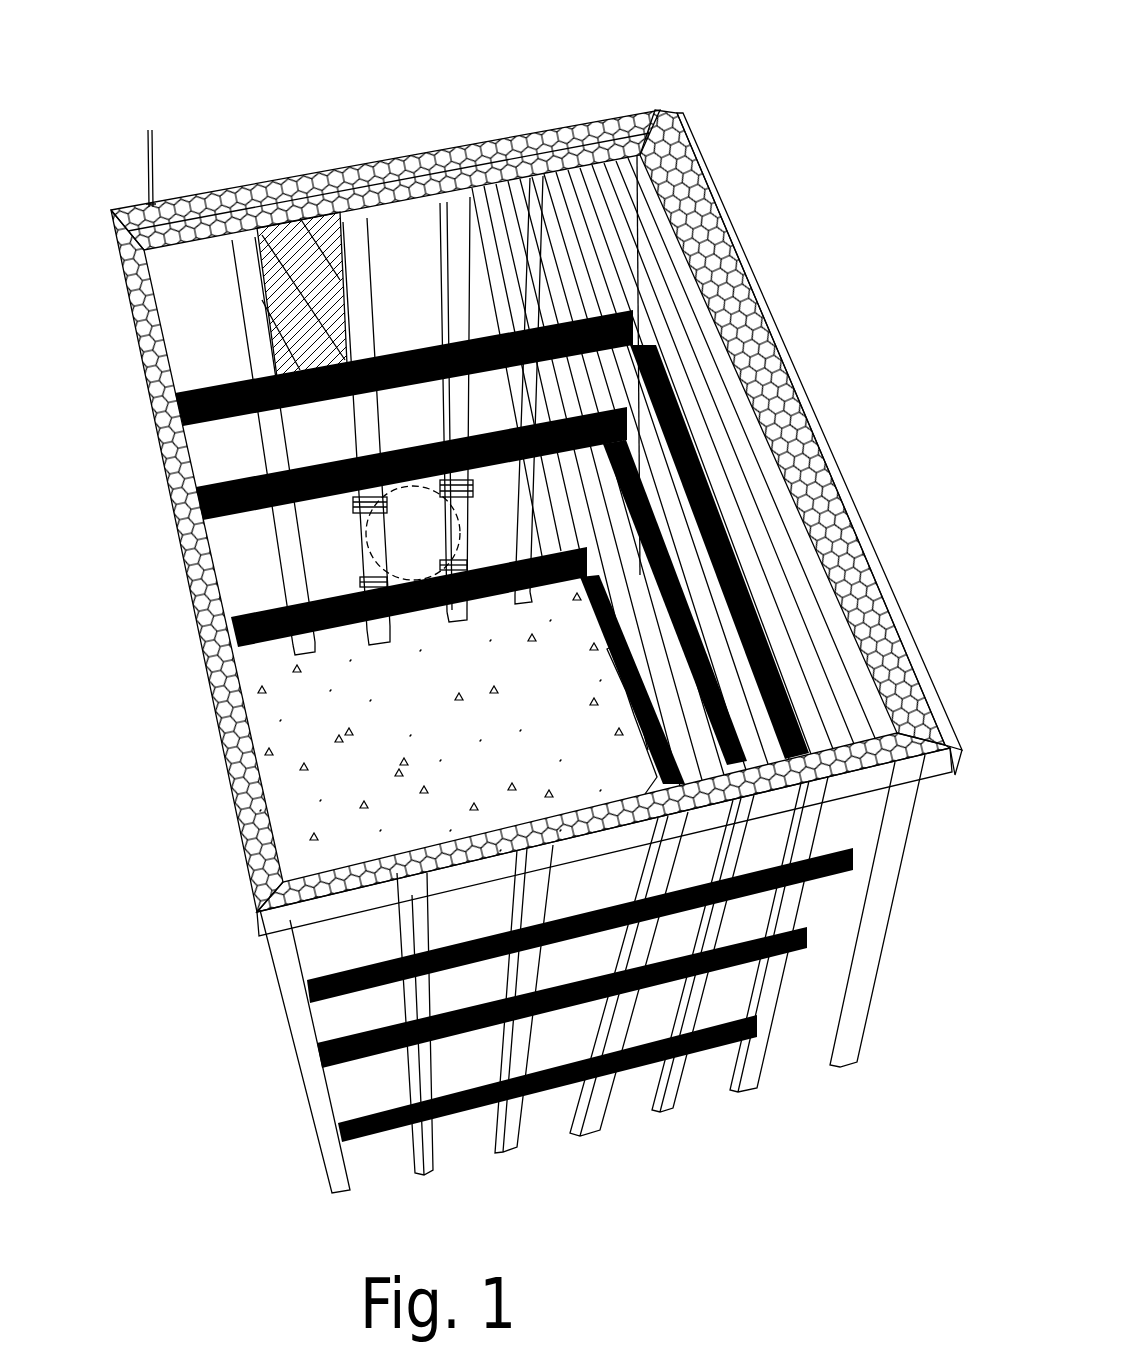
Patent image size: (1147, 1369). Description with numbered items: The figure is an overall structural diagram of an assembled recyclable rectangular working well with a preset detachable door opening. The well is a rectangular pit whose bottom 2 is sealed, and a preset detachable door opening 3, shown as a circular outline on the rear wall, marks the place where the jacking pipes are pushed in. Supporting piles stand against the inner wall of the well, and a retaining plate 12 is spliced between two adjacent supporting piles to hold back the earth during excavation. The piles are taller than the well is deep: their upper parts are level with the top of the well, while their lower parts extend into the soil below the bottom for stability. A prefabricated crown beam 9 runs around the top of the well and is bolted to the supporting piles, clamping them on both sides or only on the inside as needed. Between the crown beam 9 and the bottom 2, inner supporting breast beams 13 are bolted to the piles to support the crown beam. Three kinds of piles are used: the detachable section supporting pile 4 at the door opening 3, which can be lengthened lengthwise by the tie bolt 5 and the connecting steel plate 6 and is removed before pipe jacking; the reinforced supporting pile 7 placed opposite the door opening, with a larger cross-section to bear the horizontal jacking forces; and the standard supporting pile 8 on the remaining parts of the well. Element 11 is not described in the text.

The bottom 2 is at (370, 747).
The preset detachable door opening 3 is at (433, 553).
The detachable section supporting pile 4 is at (447, 160).
The tie bolt 5 is at (360, 580).
The connecting steel plate 6 is at (467, 493).
The reinforced supporting pile 7 is at (507, 1150).
The standard supporting pile 8 is at (745, 267).
The prefabricated crown beam 9 is at (190, 195).
The monitoring rod 11 is at (148, 132).
The retaining plate 12 is at (290, 330).
The inner supporting breast beam 13 is at (495, 320).